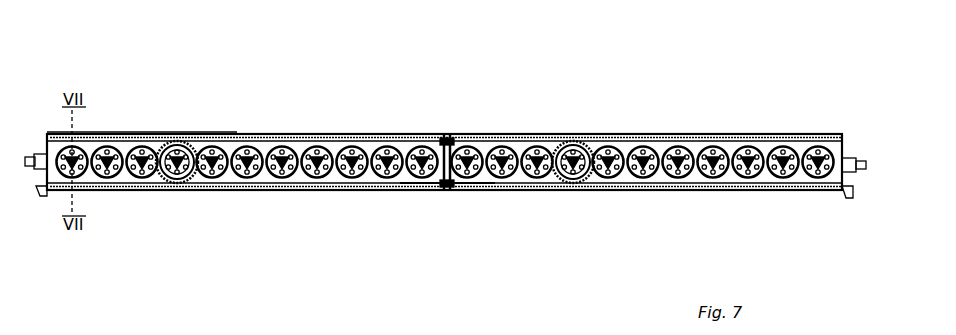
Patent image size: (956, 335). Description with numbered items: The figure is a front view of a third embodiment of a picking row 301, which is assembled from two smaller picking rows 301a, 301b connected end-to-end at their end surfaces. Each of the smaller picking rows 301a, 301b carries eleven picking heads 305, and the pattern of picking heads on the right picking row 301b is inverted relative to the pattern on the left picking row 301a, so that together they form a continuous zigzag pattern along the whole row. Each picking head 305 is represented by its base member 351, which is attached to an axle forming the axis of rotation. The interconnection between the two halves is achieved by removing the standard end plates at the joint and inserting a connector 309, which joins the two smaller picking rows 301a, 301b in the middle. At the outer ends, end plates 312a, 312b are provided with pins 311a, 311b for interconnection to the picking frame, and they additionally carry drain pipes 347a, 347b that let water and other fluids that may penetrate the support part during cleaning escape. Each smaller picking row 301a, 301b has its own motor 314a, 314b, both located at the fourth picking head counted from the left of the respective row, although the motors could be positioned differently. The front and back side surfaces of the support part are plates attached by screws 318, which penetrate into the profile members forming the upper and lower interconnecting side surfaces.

The picking row 301 is at (448, 130).
The left smaller picking row 301a is at (328, 132).
The right smaller picking row 301b is at (699, 134).
The picking head 305 is at (489, 191).
The connector 309 is at (447, 191).
The pin 311a is at (31, 152).
The pin 311b is at (853, 137).
The end plate 312a is at (45, 132).
The end plate 312b is at (829, 137).
The motor 314a is at (175, 192).
The motor 314b is at (582, 138).
The screws 318 is at (128, 133).
The drain pipe 347a is at (42, 196).
The drain pipe 347b is at (847, 196).
The base member 351 is at (420, 191).